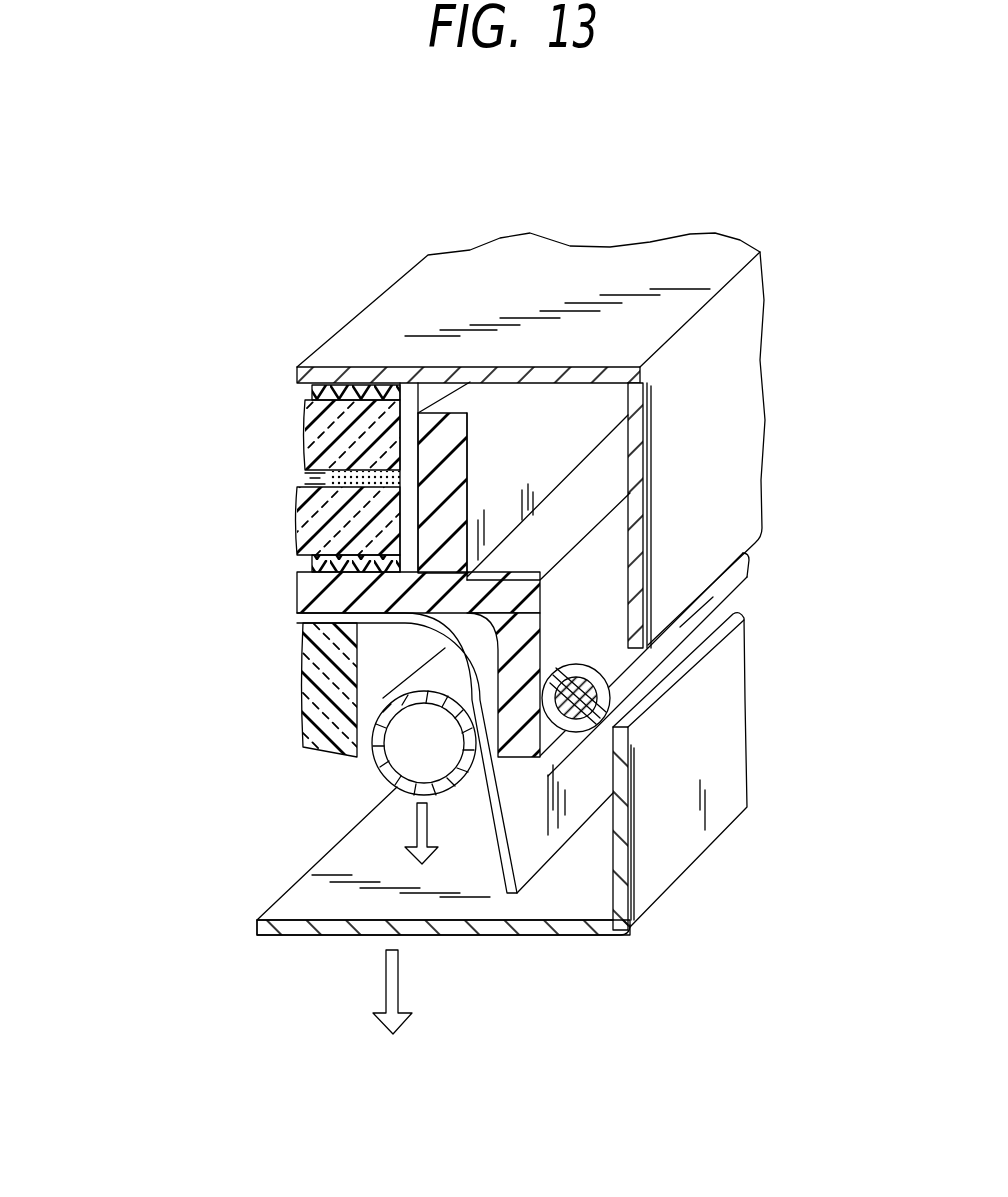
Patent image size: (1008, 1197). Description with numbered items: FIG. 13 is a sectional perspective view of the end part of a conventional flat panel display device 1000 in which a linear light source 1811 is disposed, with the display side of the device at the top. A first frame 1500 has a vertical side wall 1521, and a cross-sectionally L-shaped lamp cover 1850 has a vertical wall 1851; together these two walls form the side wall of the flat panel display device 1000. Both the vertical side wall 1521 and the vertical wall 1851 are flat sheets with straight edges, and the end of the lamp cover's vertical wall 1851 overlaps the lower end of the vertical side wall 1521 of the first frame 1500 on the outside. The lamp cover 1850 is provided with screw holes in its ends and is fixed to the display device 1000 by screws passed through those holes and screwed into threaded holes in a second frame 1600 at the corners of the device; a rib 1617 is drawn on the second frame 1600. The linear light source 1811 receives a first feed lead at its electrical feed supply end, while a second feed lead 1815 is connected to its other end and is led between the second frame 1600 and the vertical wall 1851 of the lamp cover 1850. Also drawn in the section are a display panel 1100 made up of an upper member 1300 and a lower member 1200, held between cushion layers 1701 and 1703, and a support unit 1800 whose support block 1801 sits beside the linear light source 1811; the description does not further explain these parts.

The flat panel display device 1000 is at (866, 145).
The display panel 1100 is at (158, 412).
The lower panel member 1200 is at (318, 520).
The upper panel member 1300 is at (318, 430).
The first frame 1500 is at (525, 258).
The vertical side wall 1521 is at (752, 352).
The second frame 1600 is at (320, 598).
The rib 1617 is at (455, 468).
The upper cushion member 1701 is at (347, 387).
The lower cushion member 1703 is at (322, 580).
The support unit 1800 is at (185, 738).
The support block 1801 is at (322, 705).
The linear light source 1811 is at (377, 778).
The second feed lead 1815 is at (617, 674).
The lamp cover 1850 is at (603, 933).
The vertical wall 1851 is at (723, 773).